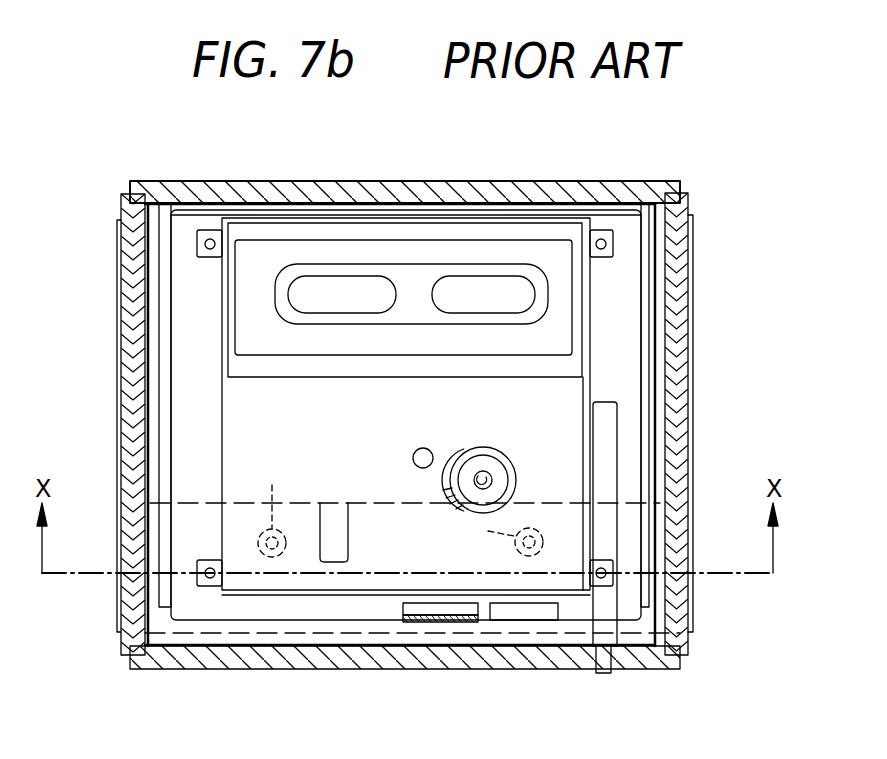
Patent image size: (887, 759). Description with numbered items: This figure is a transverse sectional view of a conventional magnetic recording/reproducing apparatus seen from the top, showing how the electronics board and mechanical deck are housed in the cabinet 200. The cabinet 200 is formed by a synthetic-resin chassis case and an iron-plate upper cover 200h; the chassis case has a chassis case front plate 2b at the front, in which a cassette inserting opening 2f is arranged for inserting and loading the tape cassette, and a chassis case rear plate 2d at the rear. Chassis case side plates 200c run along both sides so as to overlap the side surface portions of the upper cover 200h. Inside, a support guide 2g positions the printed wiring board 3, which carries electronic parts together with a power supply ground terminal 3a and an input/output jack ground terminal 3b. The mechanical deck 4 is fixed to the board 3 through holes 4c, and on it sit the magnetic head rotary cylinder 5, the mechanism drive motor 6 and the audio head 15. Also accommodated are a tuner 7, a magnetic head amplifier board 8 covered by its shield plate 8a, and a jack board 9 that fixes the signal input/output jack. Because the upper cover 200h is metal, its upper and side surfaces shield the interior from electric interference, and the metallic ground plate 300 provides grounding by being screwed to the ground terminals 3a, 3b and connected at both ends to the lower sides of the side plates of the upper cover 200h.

The cabinet 200 is at (665, 165).
The chassis case side plate 200c is at (138, 253).
The upper cover 200h is at (118, 335).
The chassis case front plate 2b is at (528, 181).
The chassis case rear plate 2d is at (237, 669).
The cassette inserting opening 2f is at (408, 181).
The support guide 2g is at (165, 421).
The printed wiring board 3 is at (195, 381).
The power supply ground terminal 3a is at (272, 506).
The input/output jack ground terminal 3b is at (499, 538).
The mechanical deck 4 is at (218, 520).
The hole for fixing the mechanical deck 4c is at (606, 244).
The magnetic head rotary cylinder 5 is at (507, 457).
The mechanism drive motor 6 is at (349, 520).
The tuner 7 is at (605, 477).
The magnetic head amplifier board 8 is at (455, 616).
The shield plate 8a is at (425, 622).
The jack board 9 is at (540, 620).
The audio head 15 is at (416, 450).
The ground plate 300 is at (361, 645).